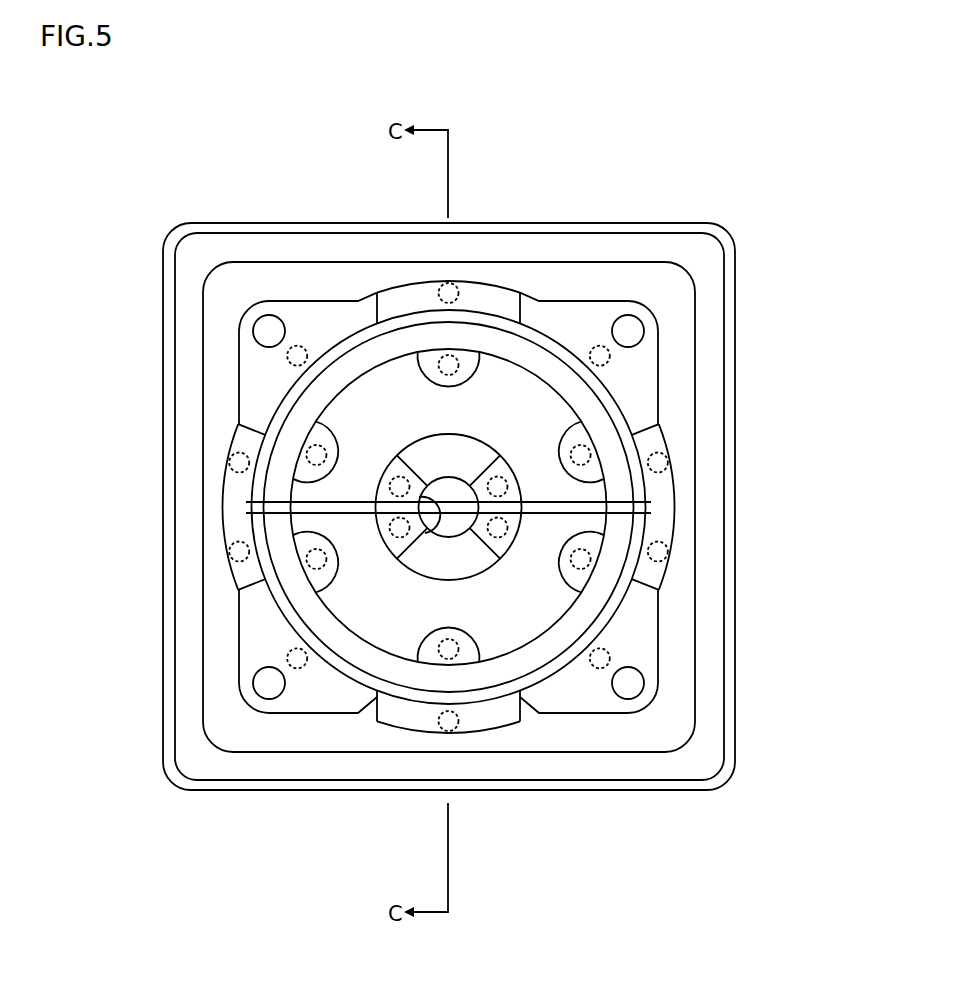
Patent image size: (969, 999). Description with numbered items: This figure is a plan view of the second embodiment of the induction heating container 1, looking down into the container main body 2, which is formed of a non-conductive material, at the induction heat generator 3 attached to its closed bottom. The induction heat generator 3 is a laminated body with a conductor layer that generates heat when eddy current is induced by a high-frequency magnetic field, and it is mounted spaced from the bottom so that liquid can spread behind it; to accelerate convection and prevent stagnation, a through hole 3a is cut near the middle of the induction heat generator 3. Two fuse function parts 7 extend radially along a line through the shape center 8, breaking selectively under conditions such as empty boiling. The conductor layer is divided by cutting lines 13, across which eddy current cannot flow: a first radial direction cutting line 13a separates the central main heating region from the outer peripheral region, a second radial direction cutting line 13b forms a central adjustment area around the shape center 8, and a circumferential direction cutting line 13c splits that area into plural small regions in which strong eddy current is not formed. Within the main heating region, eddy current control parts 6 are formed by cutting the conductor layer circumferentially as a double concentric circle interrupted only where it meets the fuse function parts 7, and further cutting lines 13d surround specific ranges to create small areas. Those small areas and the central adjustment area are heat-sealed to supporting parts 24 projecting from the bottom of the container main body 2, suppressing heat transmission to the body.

The induction heating container 1 is at (309, 166).
The container main body 2 is at (227, 295).
The induction heat generator 3 is at (245, 432).
The through hole 3a is at (433, 520).
The eddy current control part 6 is at (498, 485).
The fuse function part 7 is at (272, 493).
The shape center 8 is at (448, 505).
The cutting line 13 is at (449, 507).
The first radial direction cutting line 13a is at (329, 672).
The second radial direction cutting line 13b is at (481, 579).
The circumferential direction cutting line 13c is at (383, 713).
The cutting line 13d is at (479, 375).
The supporting part 24 is at (294, 345).